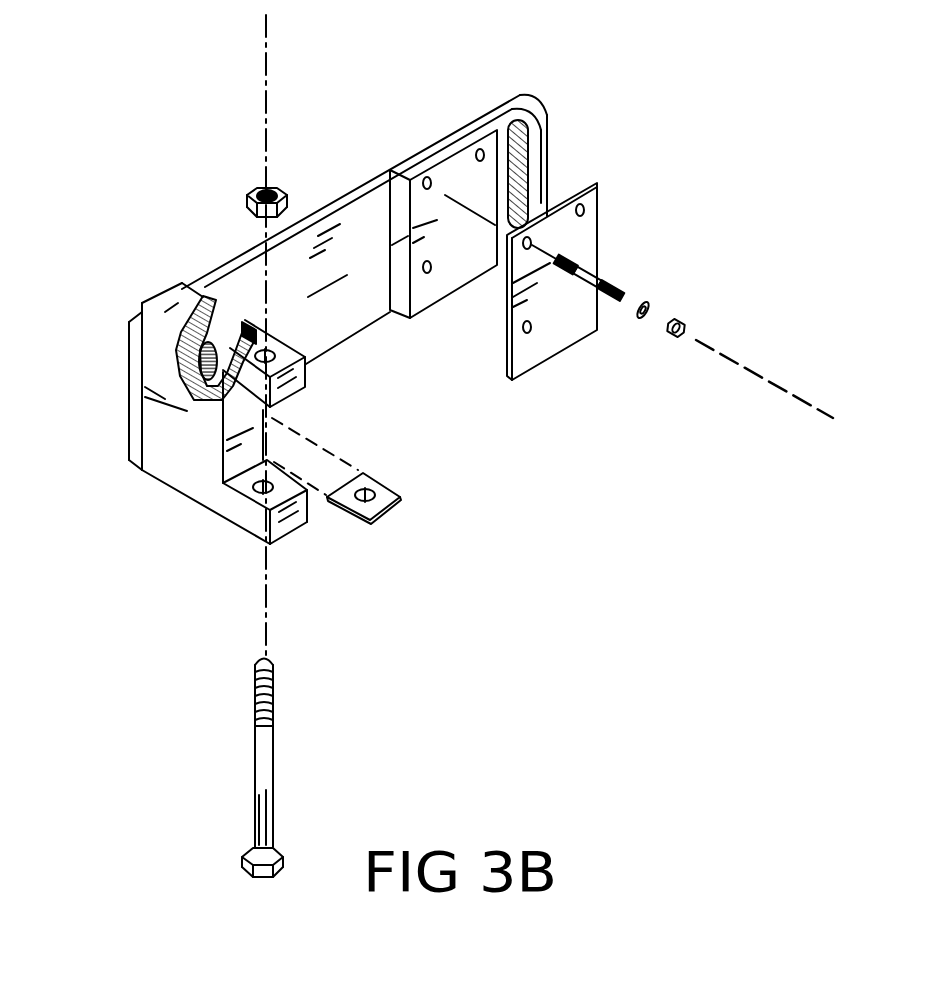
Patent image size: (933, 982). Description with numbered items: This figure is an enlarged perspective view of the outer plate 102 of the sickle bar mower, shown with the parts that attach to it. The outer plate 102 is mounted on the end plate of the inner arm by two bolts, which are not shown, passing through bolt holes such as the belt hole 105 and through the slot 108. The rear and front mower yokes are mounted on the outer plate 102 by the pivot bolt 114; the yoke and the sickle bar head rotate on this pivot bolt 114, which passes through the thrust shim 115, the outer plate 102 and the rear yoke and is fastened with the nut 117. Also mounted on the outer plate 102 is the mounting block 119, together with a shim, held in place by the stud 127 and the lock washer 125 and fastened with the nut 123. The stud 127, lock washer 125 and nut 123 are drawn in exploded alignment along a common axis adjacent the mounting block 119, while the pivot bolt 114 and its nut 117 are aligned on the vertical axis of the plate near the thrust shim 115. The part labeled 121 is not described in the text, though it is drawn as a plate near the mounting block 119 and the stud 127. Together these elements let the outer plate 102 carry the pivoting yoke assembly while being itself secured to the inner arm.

The outer plate 102 is at (330, 197).
The belt hole 105 is at (208, 342).
The slot 108 is at (520, 180).
The pivot bolt 114 is at (252, 673).
The thrust shim 115 is at (390, 478).
The nut 117 is at (247, 192).
The mounting block 119 is at (452, 143).
The plate 121 is at (612, 214).
The nut 123 is at (692, 322).
The lock washer 125 is at (656, 302).
The stud 127 is at (624, 279).